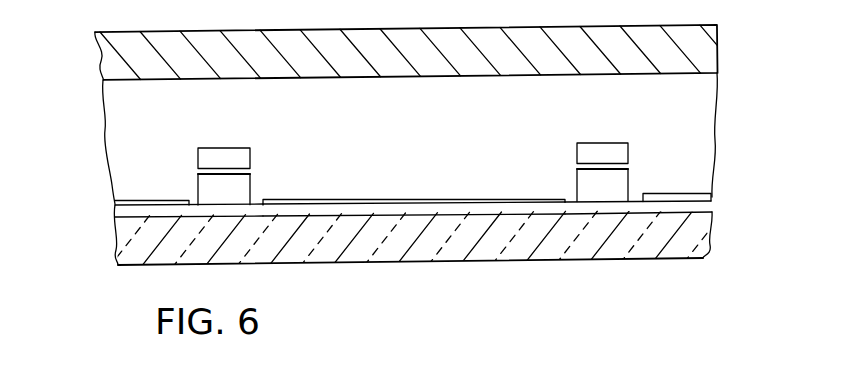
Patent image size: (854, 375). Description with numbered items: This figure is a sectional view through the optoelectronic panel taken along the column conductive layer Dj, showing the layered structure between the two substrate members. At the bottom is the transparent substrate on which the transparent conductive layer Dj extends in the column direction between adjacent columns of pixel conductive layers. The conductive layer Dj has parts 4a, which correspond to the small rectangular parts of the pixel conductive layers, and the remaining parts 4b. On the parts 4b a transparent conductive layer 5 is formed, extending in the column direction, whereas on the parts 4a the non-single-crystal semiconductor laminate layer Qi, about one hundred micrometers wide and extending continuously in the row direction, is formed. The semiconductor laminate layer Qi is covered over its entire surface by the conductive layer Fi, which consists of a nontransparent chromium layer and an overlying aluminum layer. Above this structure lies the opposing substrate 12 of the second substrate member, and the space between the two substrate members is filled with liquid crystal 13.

The substrate 12 is at (717, 58).
The liquid crystal 13 is at (715, 118).
The part of conductive layer Dj 4a is at (218, 213).
The part of conductive layer Dj 4b is at (342, 208).
The conductive layer Dj is at (423, 209).
The transparent conductive layer 5 is at (133, 200).
The non-single-crystal semiconductor laminate layer Qi is at (210, 192).
The conductive layer Fi is at (237, 153).